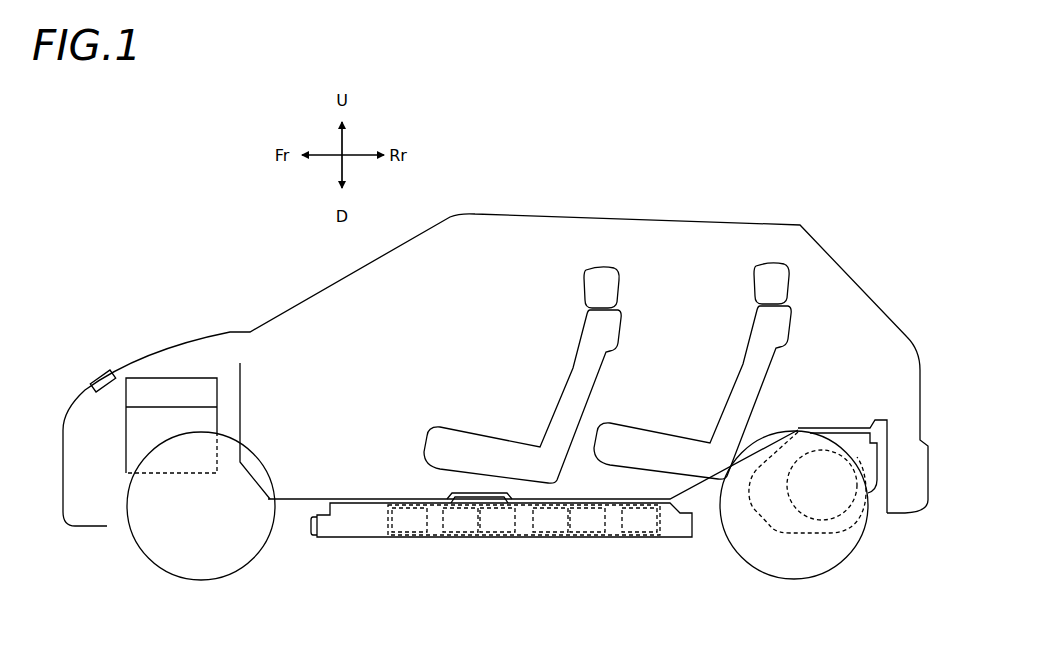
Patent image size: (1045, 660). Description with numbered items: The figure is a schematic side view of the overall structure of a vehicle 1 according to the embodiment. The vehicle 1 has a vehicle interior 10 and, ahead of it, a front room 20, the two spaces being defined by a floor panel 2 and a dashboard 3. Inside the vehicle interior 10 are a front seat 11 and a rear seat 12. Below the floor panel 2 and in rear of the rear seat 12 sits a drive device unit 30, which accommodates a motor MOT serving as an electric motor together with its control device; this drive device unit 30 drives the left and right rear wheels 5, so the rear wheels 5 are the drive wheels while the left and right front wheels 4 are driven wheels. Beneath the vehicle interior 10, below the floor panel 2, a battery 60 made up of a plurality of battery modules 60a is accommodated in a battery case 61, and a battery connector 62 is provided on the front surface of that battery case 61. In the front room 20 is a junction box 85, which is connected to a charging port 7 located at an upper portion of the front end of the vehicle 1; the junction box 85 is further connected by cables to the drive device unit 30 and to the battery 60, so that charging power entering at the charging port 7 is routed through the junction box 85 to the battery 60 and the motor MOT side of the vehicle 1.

The vehicle 1 is at (240, 219).
The floor panel 2 is at (318, 497).
The dashboard 3 is at (243, 392).
The front wheels 4 is at (264, 550).
The rear wheels 5 is at (858, 550).
The charging port 7 is at (104, 366).
The vehicle interior 10 is at (477, 298).
The front seat 11 is at (575, 366).
The rear seat 12 is at (746, 361).
The front room 20 is at (187, 368).
The drive device unit 30 is at (880, 496).
The battery 60 is at (389, 520).
The battery modules 60a is at (583, 525).
The battery case 61 is at (612, 538).
The battery connector 62 is at (313, 528).
The junction box 85 is at (148, 385).
The motor MOT is at (822, 521).